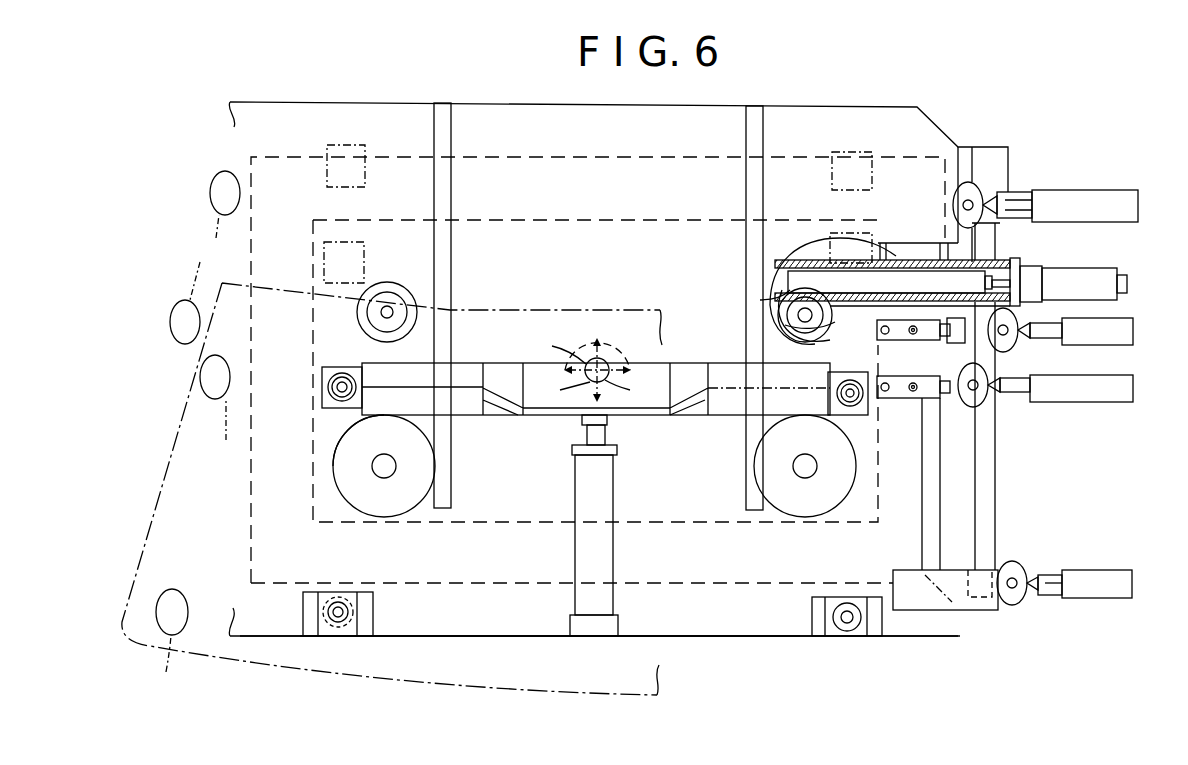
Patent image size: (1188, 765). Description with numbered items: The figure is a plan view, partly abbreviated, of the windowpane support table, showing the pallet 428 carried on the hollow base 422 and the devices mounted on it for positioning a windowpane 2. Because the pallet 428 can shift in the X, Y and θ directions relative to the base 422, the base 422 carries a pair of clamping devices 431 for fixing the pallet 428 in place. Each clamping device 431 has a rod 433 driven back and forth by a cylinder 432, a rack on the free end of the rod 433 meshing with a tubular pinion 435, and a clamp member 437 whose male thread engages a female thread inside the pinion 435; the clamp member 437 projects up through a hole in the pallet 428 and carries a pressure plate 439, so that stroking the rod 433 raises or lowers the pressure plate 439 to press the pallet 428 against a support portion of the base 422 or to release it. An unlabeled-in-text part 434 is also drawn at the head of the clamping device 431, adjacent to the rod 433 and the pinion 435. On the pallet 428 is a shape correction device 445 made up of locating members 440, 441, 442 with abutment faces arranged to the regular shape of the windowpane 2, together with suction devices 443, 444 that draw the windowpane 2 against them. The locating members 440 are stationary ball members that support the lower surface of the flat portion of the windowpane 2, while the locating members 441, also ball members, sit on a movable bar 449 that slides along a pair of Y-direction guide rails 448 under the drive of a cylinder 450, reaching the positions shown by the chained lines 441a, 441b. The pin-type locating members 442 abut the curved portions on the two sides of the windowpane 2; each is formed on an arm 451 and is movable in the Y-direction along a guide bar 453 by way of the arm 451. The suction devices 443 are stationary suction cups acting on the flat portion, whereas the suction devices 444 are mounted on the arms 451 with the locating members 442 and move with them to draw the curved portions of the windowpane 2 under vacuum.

The windowpane 2 is at (462, 706).
The hollow base 422 is at (745, 583).
The pallet 428 is at (790, 637).
The clamping device 431 is at (396, 281).
The cylinder 432 is at (1105, 268).
The rod 433 is at (920, 275).
The head 434 is at (790, 240).
The tubular pinion 435 is at (770, 300).
The clamp member 437 is at (778, 320).
The pressure plate 439 is at (372, 334).
The locating member 440 is at (356, 613).
The locating member 441 is at (320, 400).
The position of locating member 441a is at (320, 262).
The position of locating member 441b is at (323, 170).
The locating member 442 is at (1025, 402).
The suction device 443 is at (416, 512).
The suction device 444 is at (1013, 640).
The shape correction device 445 is at (330, 478).
The guide rail 448 is at (453, 200).
The movable bar 449 is at (470, 365).
The cylinder 450 is at (613, 502).
The arm 451 is at (1120, 190).
The guide bar 453 is at (997, 530).